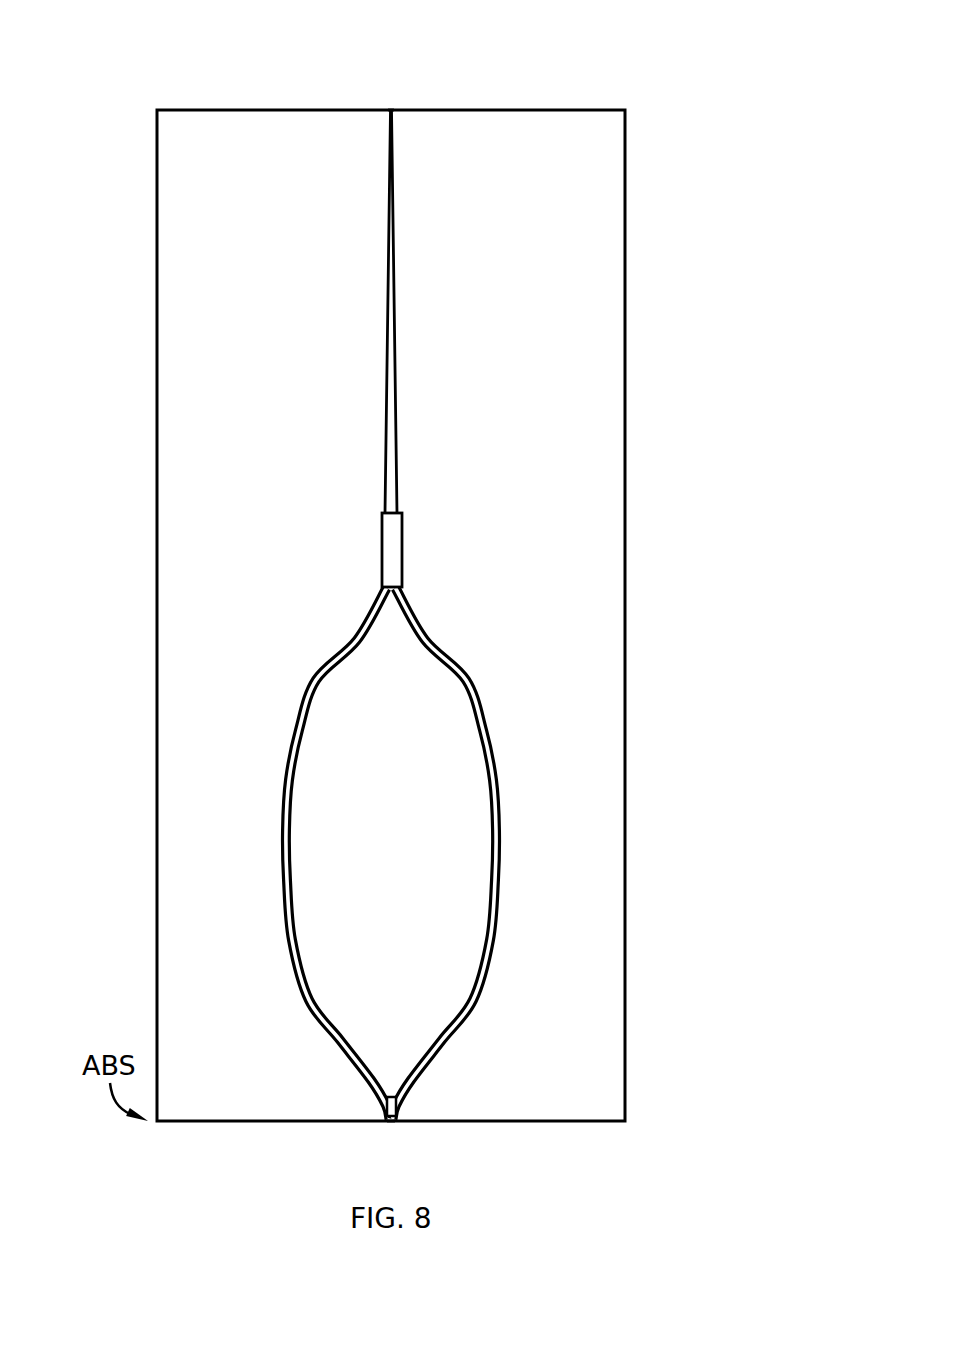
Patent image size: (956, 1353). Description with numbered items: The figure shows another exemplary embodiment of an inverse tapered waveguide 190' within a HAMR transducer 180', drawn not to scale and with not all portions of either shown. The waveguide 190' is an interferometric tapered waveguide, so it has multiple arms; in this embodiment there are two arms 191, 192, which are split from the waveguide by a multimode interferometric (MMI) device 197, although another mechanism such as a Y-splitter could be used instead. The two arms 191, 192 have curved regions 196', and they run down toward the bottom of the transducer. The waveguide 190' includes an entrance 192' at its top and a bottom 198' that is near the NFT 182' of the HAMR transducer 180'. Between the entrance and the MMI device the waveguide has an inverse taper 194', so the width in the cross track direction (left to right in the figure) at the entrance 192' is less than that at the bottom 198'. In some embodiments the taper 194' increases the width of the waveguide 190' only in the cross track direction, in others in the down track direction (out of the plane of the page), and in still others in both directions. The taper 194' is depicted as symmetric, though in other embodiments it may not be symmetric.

The HAMR transducer 180' is at (391, 560).
The entrance 192' is at (442, 78).
The inverse taper 194' is at (245, 311).
The inverse tapered waveguide 190' is at (544, 311).
The multimode interferometric (MMI) device 197 is at (402, 521).
The curved regions 196' is at (395, 611).
The arm 191 is at (250, 822).
The arm 192 is at (548, 853).
The NFT 182' is at (560, 1054).
The bottom 198' is at (443, 1147).